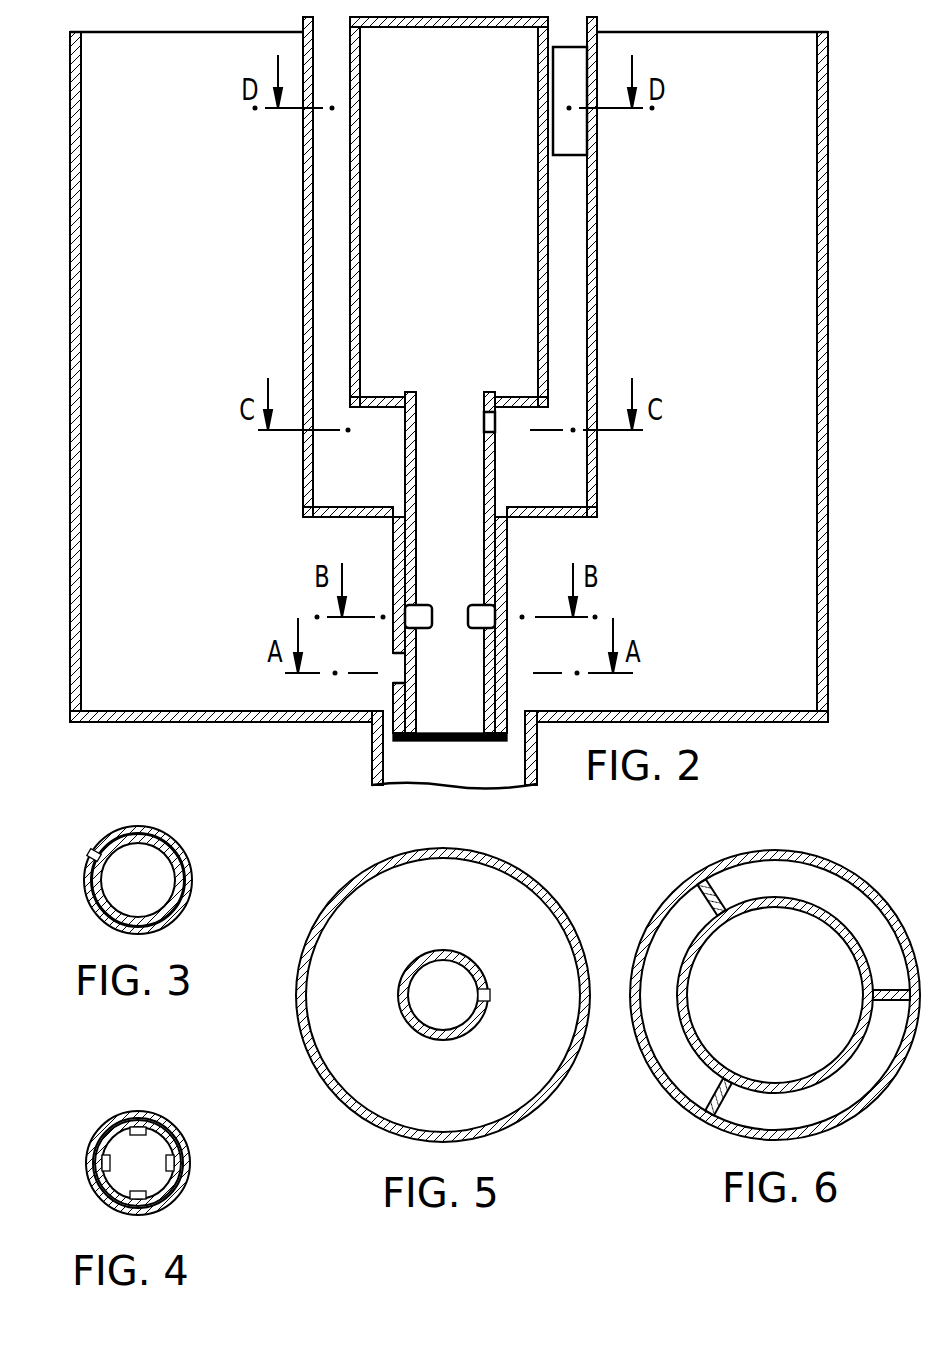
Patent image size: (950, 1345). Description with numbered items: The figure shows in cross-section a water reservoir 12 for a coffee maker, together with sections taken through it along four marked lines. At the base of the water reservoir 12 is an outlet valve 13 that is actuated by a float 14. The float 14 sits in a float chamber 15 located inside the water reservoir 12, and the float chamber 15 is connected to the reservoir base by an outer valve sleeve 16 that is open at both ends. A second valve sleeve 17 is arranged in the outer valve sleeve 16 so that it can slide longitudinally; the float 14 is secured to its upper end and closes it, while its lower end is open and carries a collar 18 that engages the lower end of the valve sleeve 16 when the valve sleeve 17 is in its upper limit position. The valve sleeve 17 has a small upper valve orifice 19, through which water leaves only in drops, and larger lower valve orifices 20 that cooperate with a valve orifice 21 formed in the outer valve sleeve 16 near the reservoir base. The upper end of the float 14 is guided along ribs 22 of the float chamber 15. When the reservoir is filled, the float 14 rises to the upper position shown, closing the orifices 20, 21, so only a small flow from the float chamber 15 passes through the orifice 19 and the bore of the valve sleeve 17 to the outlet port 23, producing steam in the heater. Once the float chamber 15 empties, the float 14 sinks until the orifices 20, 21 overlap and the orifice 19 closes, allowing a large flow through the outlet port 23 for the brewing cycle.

In FIG. 2, the water reservoir 12 is at (81, 268).
In FIG. 2, the outlet valve 13 is at (386, 560).
In FIG. 2, the float 14 is at (540, 240).
In FIG. 6, the float 14 is at (688, 1007).
In FIG. 2, the float chamber 15 is at (572, 248).
In FIG. 5, the float chamber 15 is at (340, 1052).
In FIG. 6, the float chamber 15 is at (685, 1070).
In FIG. 2, the outer valve sleeve 16 is at (513, 540).
In FIG. 3, the outer valve sleeve 16 is at (188, 862).
In FIG. 4, the outer valve sleeve 16 is at (97, 1140).
In FIG. 2, the valve sleeve 17 is at (403, 468).
In FIG. 3, the valve sleeve 17 is at (100, 888).
In FIG. 4, the valve sleeve 17 is at (100, 1183).
In FIG. 5, the valve sleeve 17 is at (398, 993).
In FIG. 2, the collar 18 is at (402, 742).
In FIG. 2, the upper valve orifice 19 is at (497, 432).
In FIG. 5, the upper valve orifice 19 is at (488, 992).
In FIG. 2, the lower valve orifices 20 is at (477, 603).
In FIG. 4, the lower valve orifices 20 is at (133, 1150).
In FIG. 2, the valve orifice 21 is at (397, 665).
In FIG. 3, the valve orifice 21 is at (92, 855).
In FIG. 2, the ribs 22 is at (572, 138).
In FIG. 6, the ribs 22 is at (710, 899).
In FIG. 2, the outlet port 23 is at (370, 771).